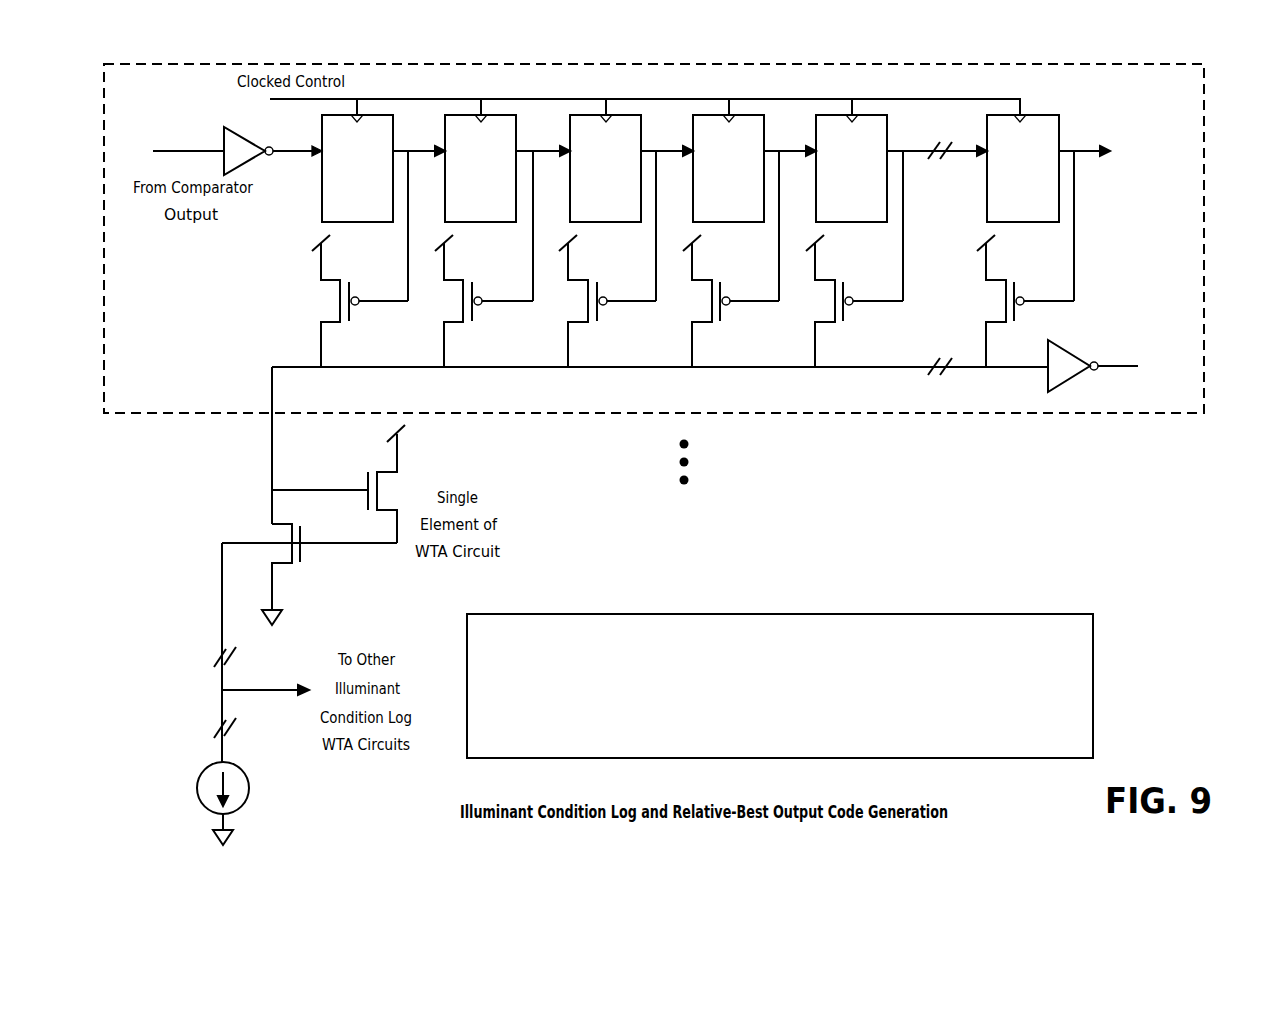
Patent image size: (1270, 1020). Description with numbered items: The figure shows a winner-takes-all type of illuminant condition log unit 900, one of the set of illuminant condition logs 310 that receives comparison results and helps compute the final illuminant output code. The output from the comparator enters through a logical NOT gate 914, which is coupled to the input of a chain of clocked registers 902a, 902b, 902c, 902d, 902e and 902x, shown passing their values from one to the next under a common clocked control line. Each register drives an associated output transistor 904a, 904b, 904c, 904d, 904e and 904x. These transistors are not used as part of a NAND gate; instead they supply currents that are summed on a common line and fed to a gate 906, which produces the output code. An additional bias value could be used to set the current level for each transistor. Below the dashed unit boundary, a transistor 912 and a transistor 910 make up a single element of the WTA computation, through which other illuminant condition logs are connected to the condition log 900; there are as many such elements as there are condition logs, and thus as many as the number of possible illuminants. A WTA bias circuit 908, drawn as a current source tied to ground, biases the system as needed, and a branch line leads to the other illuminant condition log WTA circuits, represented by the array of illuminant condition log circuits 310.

The winner-takes-all illuminant condition log unit 900 is at (1250, 97).
The logical NOT gate 914 is at (258, 122).
The register 902a is at (393, 138).
The register 902b is at (516, 138).
The register 902c is at (641, 138).
The register 902d is at (764, 138).
The register 902e is at (887, 138).
The register 902x is at (1059, 138).
The output transistor 904a is at (333, 286).
The output transistor 904b is at (455, 288).
The output transistor 904c is at (580, 288).
The output transistor 904d is at (704, 288).
The output transistor 904e is at (827, 288).
The output transistor 904x is at (996, 288).
The gate 906 is at (1066, 346).
The transistor 912 is at (400, 484).
The transistor 910 is at (300, 560).
The WTA bias circuit 908 is at (248, 808).
The illuminant condition logs 310 is at (1056, 612).